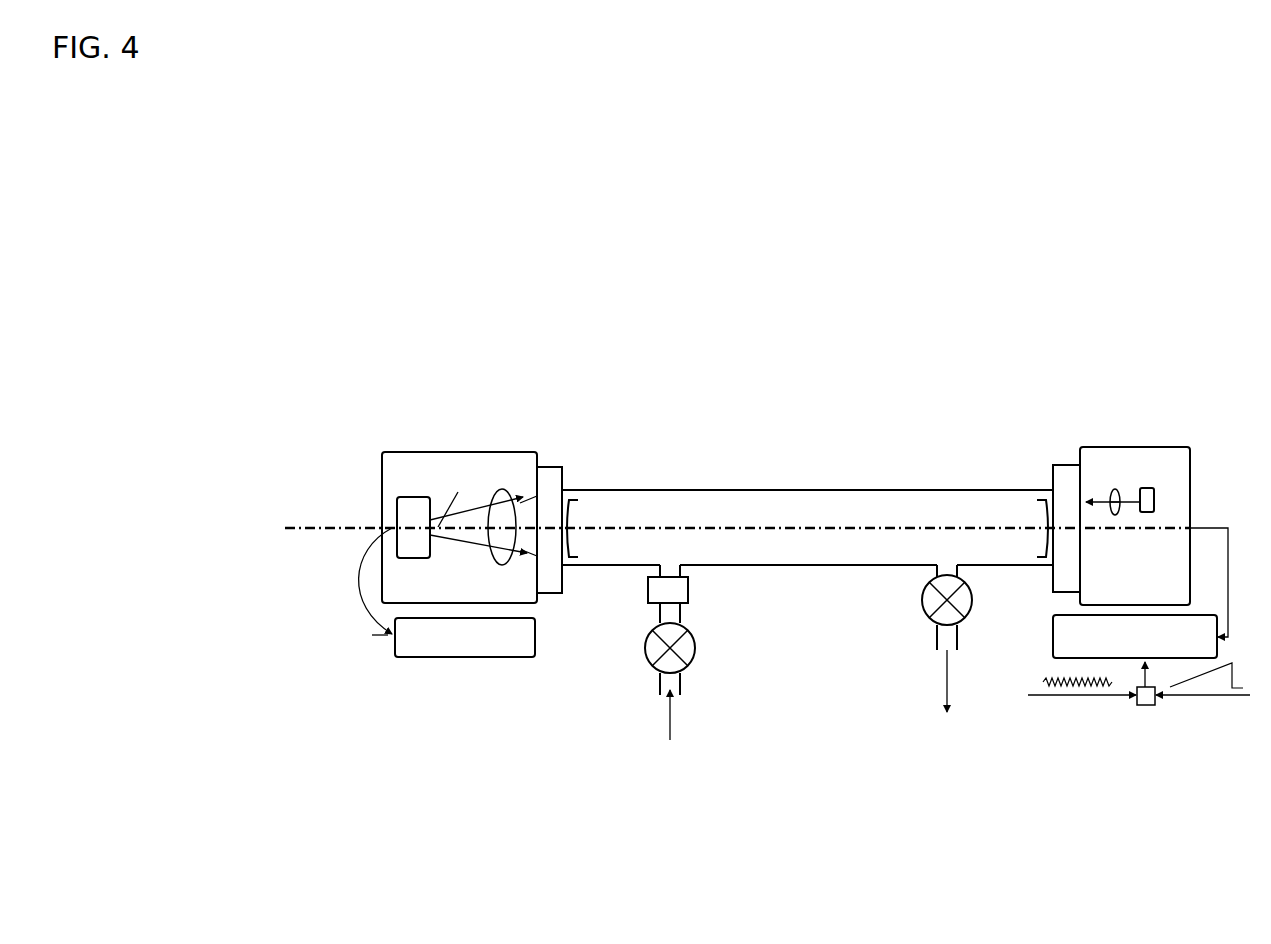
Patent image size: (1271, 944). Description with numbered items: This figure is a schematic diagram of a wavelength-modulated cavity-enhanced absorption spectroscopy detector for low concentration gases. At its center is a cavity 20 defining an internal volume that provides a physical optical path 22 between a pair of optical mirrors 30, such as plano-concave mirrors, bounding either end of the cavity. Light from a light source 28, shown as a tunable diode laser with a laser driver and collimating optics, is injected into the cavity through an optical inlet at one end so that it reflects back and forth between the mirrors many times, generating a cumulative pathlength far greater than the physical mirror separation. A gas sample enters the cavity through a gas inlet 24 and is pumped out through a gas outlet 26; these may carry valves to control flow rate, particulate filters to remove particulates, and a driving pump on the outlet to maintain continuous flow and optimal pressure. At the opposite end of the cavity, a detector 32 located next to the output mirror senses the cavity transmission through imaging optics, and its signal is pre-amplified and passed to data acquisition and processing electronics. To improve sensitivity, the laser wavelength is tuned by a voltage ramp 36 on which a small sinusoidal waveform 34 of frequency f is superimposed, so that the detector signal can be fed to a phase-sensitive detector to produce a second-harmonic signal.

The cavity 20 is at (968, 490).
The optical path 22 is at (772, 528).
The gas inlet 24 is at (660, 680).
The gas outlet 26 is at (937, 632).
The light source 28 is at (1120, 447).
The optical mirrors 30 is at (990, 496).
The detector 32 is at (493, 452).
The sinusoidal waveform 34 is at (1088, 750).
The voltage ramp 36 is at (1218, 728).